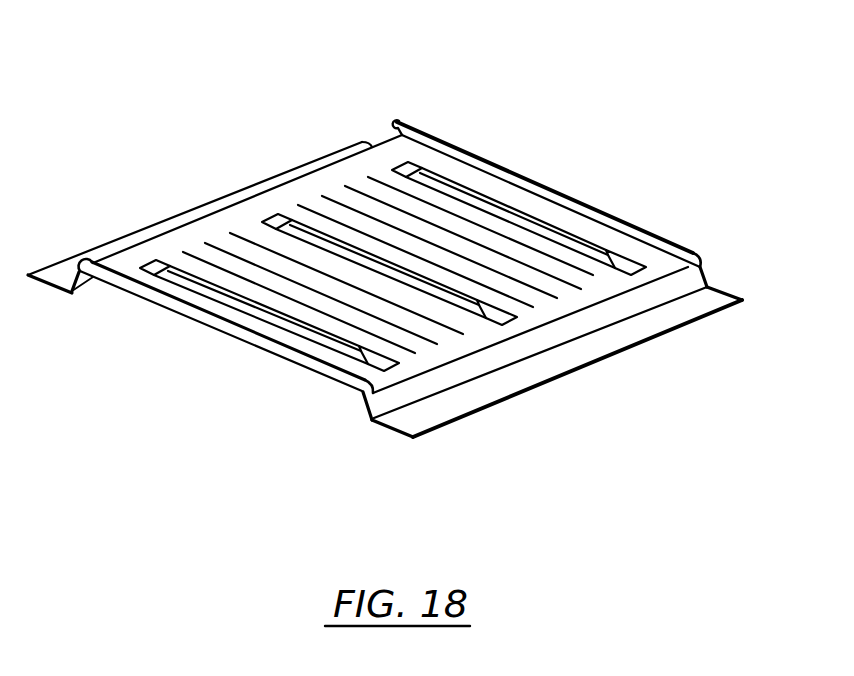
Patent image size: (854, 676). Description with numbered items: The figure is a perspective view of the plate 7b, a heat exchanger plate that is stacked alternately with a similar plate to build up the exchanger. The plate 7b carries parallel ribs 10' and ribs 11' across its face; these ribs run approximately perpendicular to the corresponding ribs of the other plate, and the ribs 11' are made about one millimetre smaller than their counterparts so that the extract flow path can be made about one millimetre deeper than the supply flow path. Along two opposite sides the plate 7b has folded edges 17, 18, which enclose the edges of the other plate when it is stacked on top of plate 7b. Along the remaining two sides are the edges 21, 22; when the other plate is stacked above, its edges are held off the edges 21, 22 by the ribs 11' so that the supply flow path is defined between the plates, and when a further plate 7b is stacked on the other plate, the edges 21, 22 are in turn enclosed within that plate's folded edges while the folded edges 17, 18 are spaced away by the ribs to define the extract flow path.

The plate 7b is at (389, 260).
The ribs 10' is at (388, 178).
The ribs 11' is at (434, 315).
The folded edge 17 is at (194, 316).
The folded edge 18 is at (487, 157).
The edge 21 is at (167, 221).
The edge 22 is at (617, 361).